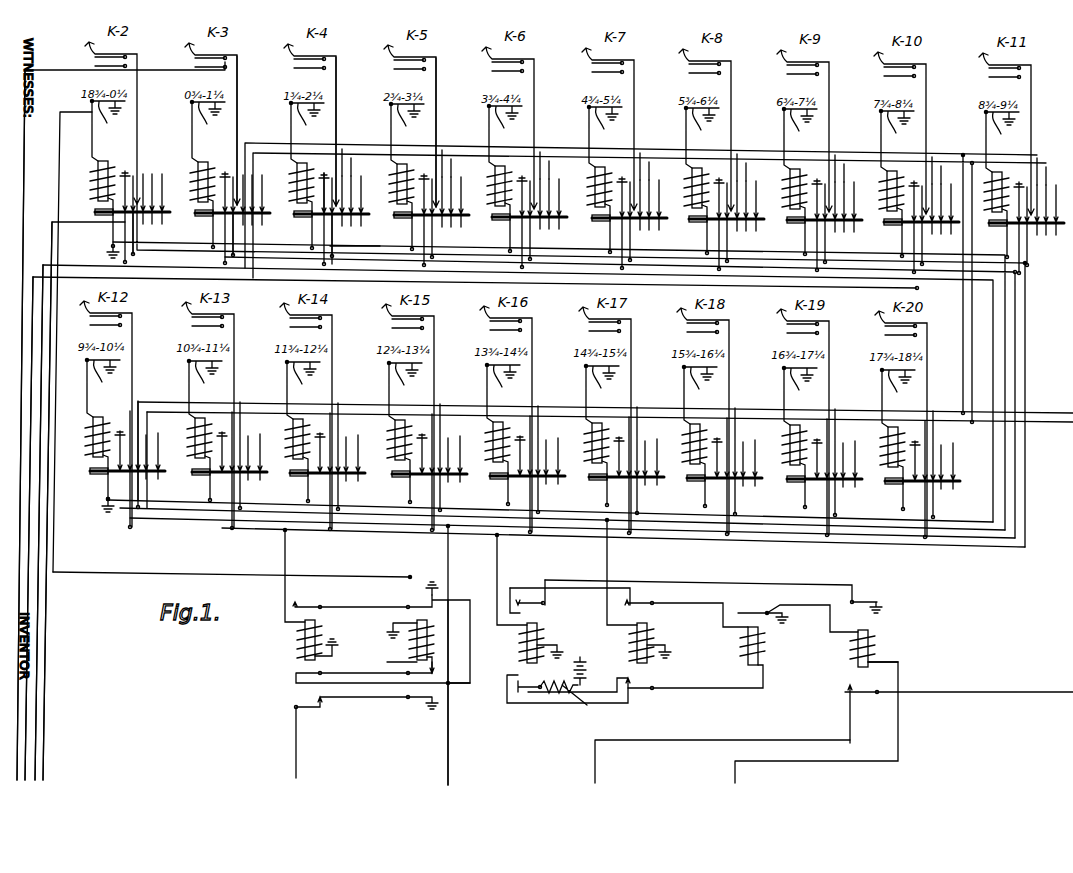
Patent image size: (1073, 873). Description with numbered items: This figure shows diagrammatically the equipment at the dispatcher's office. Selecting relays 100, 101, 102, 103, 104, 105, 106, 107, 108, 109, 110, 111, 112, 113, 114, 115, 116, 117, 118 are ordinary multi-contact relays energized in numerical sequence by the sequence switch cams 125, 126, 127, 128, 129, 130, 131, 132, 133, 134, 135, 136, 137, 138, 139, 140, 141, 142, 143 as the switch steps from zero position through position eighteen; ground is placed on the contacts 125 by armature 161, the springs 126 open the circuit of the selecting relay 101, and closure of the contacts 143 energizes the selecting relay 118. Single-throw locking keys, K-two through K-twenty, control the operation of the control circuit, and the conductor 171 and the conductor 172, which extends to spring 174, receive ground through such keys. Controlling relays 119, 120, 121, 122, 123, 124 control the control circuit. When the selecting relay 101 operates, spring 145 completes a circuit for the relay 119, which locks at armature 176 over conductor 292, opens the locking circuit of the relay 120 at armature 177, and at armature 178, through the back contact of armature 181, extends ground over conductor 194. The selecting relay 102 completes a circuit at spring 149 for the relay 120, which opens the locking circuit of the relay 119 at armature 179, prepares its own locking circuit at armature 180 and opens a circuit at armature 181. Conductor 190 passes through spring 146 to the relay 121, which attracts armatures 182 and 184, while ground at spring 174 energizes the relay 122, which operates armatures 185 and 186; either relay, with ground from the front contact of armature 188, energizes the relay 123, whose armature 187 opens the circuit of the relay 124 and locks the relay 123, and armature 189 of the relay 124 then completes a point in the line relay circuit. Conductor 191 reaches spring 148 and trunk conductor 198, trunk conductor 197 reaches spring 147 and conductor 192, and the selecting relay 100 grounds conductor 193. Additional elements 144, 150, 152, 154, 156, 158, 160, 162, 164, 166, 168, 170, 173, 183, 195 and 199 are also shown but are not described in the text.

The selecting relay 100 is at (97, 186).
The selecting relay 101 is at (196, 168).
The selecting relay 102 is at (298, 167).
The selecting relay 103 is at (397, 170).
The selecting relay 104 is at (496, 170).
The selecting relay 105 is at (596, 172).
The selecting relay 106 is at (693, 173).
The selecting relay 107 is at (790, 175).
The selecting relay 108 is at (887, 178).
The selecting relay 109 is at (996, 172).
The selecting relay 110 is at (92, 447).
The selecting relay 111 is at (194, 429).
The selecting relay 112 is at (292, 430).
The selecting relay 113 is at (395, 432).
The selecting relay 114 is at (493, 433).
The selecting relay 115 is at (592, 434).
The selecting relay 116 is at (690, 435).
The selecting relay 117 is at (790, 437).
The selecting relay 118 is at (888, 438).
The controlling relay 119 is at (304, 645).
The controlling relay 120 is at (408, 640).
The controlling relay 121 is at (526, 645).
The controlling relay 122 is at (636, 645).
The controlling relay 123 is at (747, 647).
The controlling relay 124 is at (857, 649).
The sequence switch cam contacts 125 is at (111, 130).
The sequence switch cam springs 126 is at (208, 131).
The sequence switch cam 127 is at (307, 132).
The sequence switch cam contacts 128 is at (406, 133).
The sequence switch cam contacts 129 is at (505, 135).
The sequence switch cam contacts 130 is at (604, 136).
The sequence switch cam contacts 131 is at (701, 137).
The sequence switch cam contacts 132 is at (800, 138).
The sequence switch cam contacts 133 is at (896, 140).
The sequence switch cam contacts 134 is at (985, 115).
The sequence switch cam contacts 135 is at (104, 387).
The sequence switch cam contacts 136 is at (204, 388).
The sequence switch cam contacts 137 is at (305, 389).
The sequence switch cam contacts 138 is at (405, 390).
The sequence switch cam contacts 139 is at (504, 392).
The sequence switch cam contacts 140 is at (602, 393).
The sequence switch cam contacts 141 is at (702, 394).
The sequence switch cam contacts 142 is at (800, 395).
The sequence switch cam contacts 143 is at (495, 299).
The contact conductor 144 is at (133, 216).
The spring 145 is at (200, 214).
The spring 146 is at (225, 225).
The spring 147 is at (312, 222).
The spring 148 is at (300, 195).
The spring 149 is at (300, 216).
The contact bar 150 is at (399, 217).
The contact bar 152 is at (505, 219).
The contact bar 154 is at (605, 220).
The contact bar 156 is at (702, 221).
The contact bar 158 is at (798, 222).
The contact bar 160 is at (903, 224).
The contact bar 162 is at (1008, 225).
The contact bar 164 is at (100, 474).
The contact bar 166 is at (204, 475).
The contact bar 168 is at (306, 476).
The contact bar 170 is at (406, 477).
The conductor 171 is at (249, 102).
The conductor 172 is at (337, 104).
The conductor 173 is at (437, 106).
The spring 174 is at (357, 233).
The armature 176 is at (296, 606).
The armature 177 is at (296, 672).
The armature 178 is at (305, 707).
The armature 179 is at (417, 607).
The armature 180 is at (410, 662).
The armature 181 is at (415, 700).
The armature 182 is at (525, 600).
The resistor 183 is at (568, 693).
The armature 184 is at (520, 690).
The armature 185 is at (645, 603).
The armature 186 is at (640, 690).
The armature 187 is at (772, 604).
The armature 188 is at (870, 602).
The armature 189 is at (852, 694).
The armature 161 is at (410, 577).
The conductor 190 is at (18, 713).
The conductor 191 is at (25, 730).
The conductor 192 is at (35, 740).
The conductor 193 is at (43, 755).
The conductor 194 is at (296, 762).
The conductor 195 is at (595, 764).
The trunk conductor 197 is at (1052, 413).
The trunk conductor 198 is at (755, 776).
The conductor 199 is at (1000, 680).
The conductor 292 is at (448, 762).